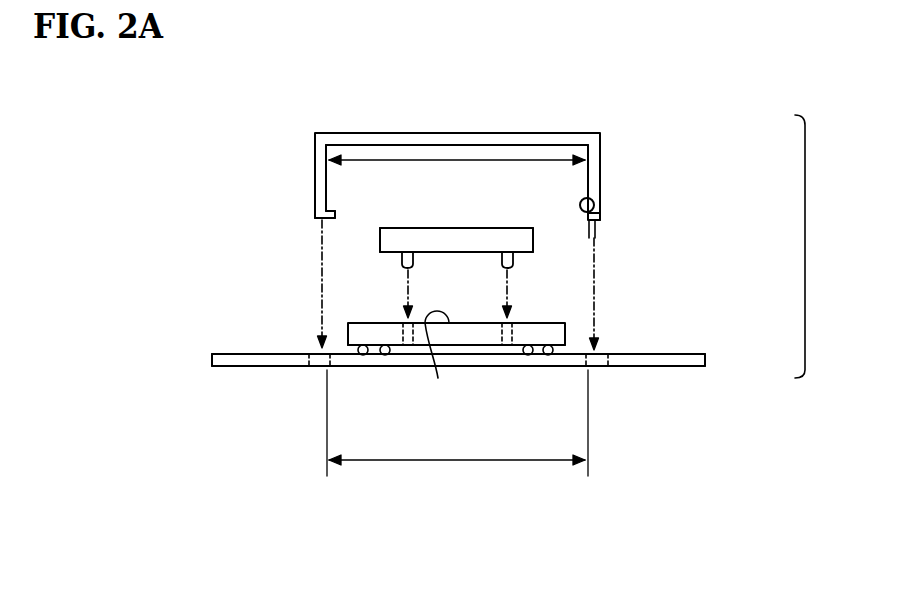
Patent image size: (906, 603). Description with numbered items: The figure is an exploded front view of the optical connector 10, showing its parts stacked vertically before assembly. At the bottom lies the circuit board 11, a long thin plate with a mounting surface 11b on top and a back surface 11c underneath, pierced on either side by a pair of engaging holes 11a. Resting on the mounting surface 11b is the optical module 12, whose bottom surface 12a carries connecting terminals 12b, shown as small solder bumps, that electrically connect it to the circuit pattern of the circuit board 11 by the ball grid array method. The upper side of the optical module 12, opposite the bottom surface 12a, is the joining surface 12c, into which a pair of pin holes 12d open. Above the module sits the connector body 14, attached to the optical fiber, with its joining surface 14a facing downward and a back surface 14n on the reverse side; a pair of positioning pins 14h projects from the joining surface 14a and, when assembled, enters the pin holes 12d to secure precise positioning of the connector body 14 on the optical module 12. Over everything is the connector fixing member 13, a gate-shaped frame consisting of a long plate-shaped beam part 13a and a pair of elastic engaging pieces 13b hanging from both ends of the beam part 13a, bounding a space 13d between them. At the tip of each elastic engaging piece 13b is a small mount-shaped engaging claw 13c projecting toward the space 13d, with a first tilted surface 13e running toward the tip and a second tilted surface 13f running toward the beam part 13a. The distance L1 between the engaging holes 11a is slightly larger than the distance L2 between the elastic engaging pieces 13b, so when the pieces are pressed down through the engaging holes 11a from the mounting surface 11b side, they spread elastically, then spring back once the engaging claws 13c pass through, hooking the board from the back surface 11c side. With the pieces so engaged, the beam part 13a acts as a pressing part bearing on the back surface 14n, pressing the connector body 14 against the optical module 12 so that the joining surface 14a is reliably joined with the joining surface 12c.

The optical connector 10 is at (805, 247).
The circuit board 11 is at (705, 360).
The engaging holes 11a is at (312, 368).
The surface 11b is at (240, 354).
The back surface 11c is at (240, 366).
The optical module 12 is at (565, 323).
The bottom surface 12a is at (472, 346).
The connecting terminals 12b is at (530, 355).
The joining surface 12c is at (438, 357).
The pin holes 12d is at (406, 366).
The connector fixing member 13 is at (514, 133).
The beam part 13a is at (445, 133).
The elastic engaging pieces 13b is at (315, 172).
The engaging claws 13c is at (334, 220).
The space 13d is at (478, 199).
The first tilted surface 13e is at (595, 240).
The second tilted surface 13f is at (598, 200).
The connector body 14 is at (498, 228).
The joining surface 14a is at (452, 252).
The positioning pins 14h is at (413, 260).
The back surface 14n is at (405, 228).
The distance between the pair of engaging holes L1 is at (460, 462).
The distance between the pair of elastic engaging pieces L2 is at (420, 160).